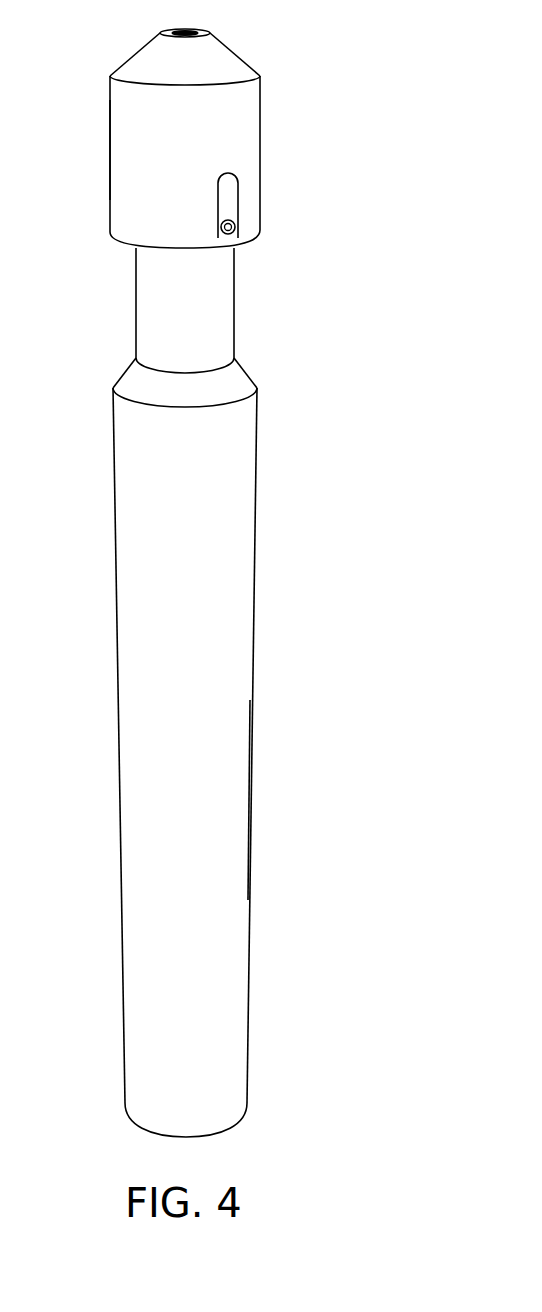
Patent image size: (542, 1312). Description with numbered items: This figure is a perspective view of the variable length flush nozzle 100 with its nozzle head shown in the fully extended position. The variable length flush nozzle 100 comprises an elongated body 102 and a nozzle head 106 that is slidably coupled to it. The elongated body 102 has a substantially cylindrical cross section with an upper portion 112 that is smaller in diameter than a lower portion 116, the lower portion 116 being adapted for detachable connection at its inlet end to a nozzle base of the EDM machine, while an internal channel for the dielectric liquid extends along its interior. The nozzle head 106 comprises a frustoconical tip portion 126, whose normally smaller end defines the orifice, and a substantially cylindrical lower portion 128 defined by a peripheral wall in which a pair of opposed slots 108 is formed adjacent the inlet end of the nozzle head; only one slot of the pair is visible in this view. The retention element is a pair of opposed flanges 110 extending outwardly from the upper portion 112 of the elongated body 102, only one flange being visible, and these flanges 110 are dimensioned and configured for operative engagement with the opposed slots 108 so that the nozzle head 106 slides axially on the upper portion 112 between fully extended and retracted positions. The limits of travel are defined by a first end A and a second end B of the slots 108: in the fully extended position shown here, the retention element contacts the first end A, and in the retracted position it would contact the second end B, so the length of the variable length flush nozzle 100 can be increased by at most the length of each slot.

The variable length flush nozzle 100 is at (370, 276).
The elongated body 102 is at (257, 606).
The nozzle head 106 is at (265, 116).
The pair of opposed slots 108 is at (228, 198).
The pair of opposed flanges 110 is at (232, 229).
The upper portion 112 is at (234, 320).
The lower portion 116 is at (251, 806).
The frustoconical tip portion 126 is at (237, 53).
The substantially cylindrical lower portion 128 is at (110, 161).
The first end A is at (220, 228).
The second end B is at (220, 175).